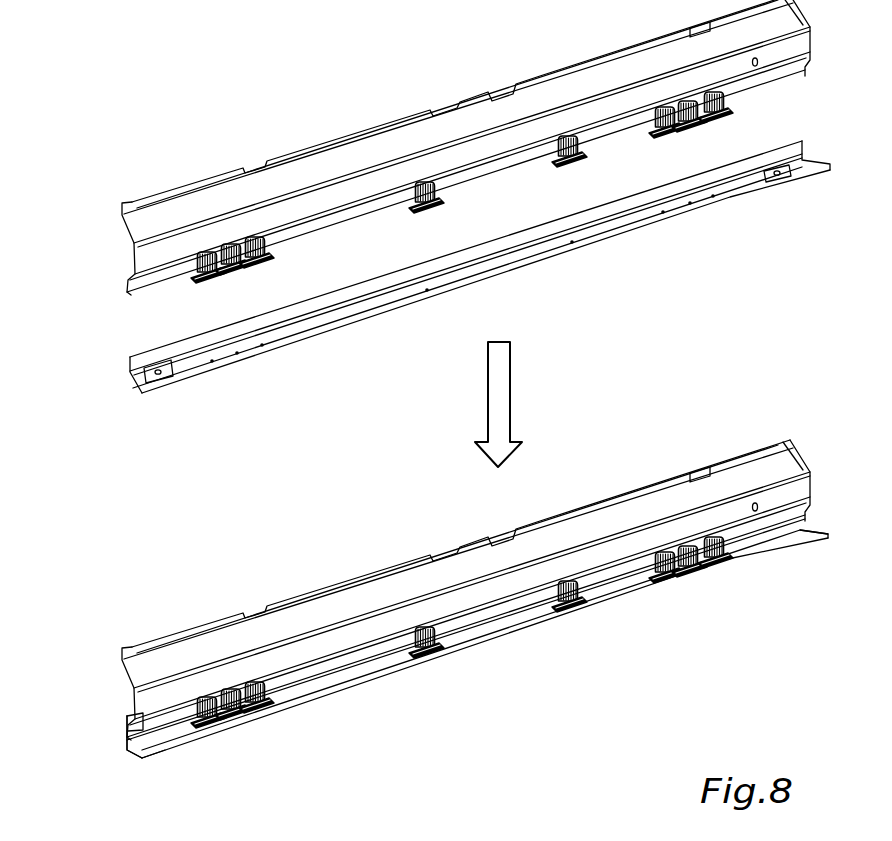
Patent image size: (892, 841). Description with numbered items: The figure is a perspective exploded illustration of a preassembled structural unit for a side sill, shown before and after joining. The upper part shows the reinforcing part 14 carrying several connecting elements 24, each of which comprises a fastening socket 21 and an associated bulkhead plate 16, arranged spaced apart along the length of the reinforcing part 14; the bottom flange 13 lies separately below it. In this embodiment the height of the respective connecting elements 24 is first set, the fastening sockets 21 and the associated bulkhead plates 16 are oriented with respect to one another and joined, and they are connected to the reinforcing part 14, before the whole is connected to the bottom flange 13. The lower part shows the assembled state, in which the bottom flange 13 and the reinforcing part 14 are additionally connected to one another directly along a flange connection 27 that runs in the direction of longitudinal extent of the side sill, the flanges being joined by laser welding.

The bottom flange 13 is at (383, 298).
The reinforcing part 14 is at (337, 162).
The bulkhead plate 16 is at (582, 148).
The fastening socket 21 is at (553, 157).
The connecting elements 24 is at (272, 267).
The flange connection 27 is at (120, 735).